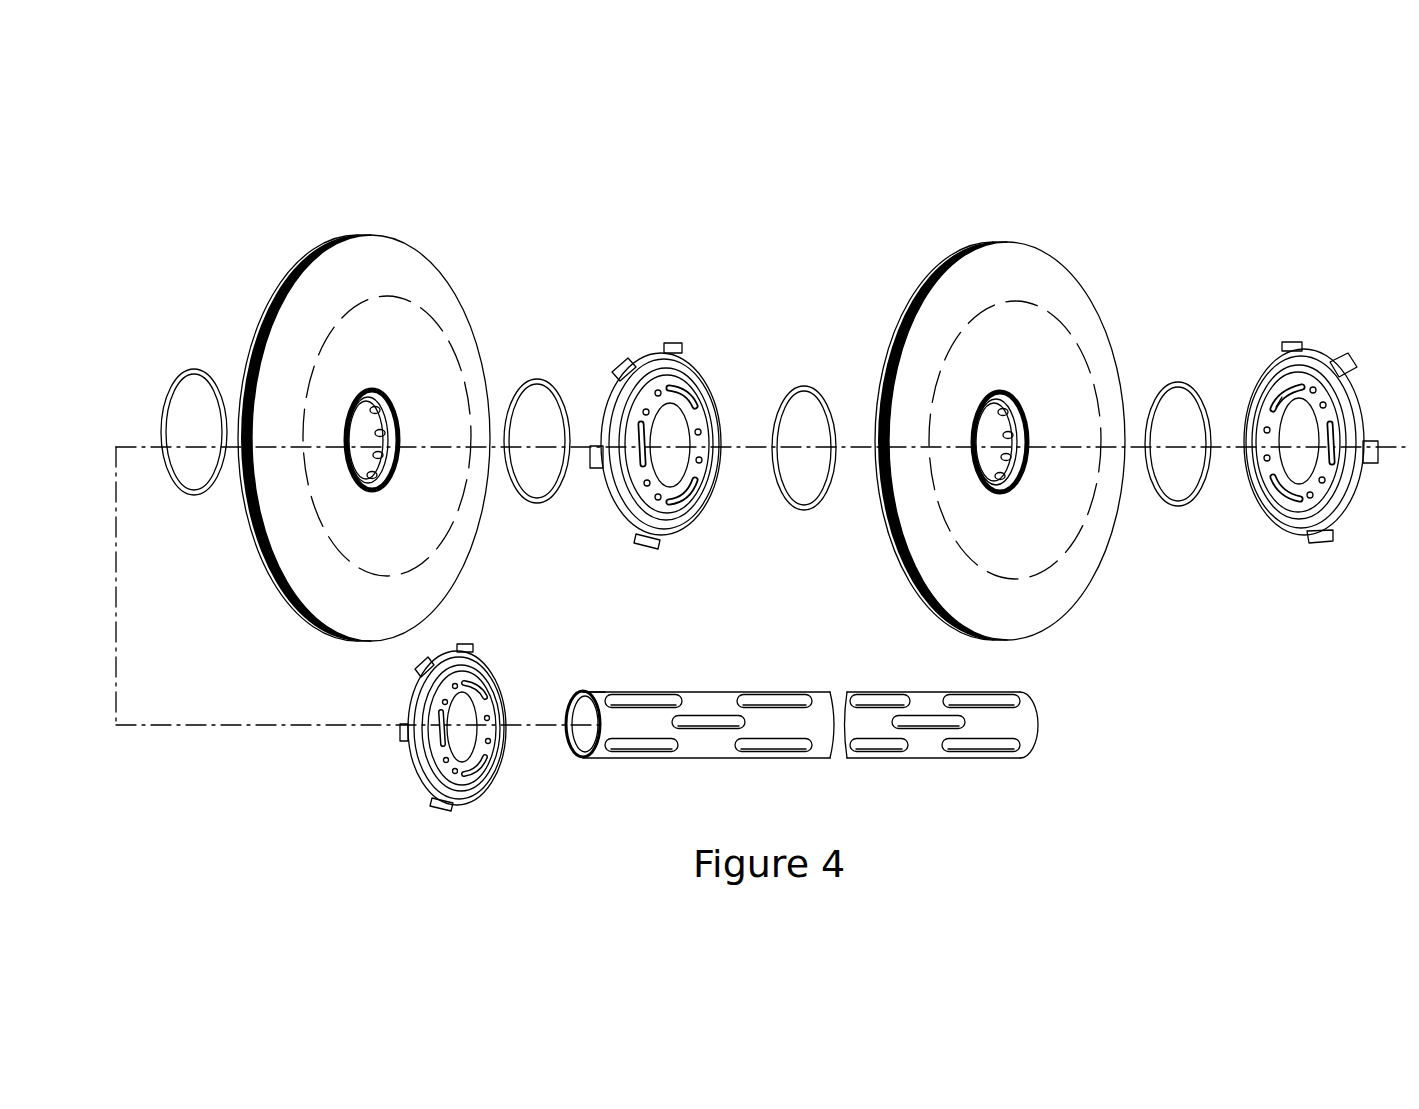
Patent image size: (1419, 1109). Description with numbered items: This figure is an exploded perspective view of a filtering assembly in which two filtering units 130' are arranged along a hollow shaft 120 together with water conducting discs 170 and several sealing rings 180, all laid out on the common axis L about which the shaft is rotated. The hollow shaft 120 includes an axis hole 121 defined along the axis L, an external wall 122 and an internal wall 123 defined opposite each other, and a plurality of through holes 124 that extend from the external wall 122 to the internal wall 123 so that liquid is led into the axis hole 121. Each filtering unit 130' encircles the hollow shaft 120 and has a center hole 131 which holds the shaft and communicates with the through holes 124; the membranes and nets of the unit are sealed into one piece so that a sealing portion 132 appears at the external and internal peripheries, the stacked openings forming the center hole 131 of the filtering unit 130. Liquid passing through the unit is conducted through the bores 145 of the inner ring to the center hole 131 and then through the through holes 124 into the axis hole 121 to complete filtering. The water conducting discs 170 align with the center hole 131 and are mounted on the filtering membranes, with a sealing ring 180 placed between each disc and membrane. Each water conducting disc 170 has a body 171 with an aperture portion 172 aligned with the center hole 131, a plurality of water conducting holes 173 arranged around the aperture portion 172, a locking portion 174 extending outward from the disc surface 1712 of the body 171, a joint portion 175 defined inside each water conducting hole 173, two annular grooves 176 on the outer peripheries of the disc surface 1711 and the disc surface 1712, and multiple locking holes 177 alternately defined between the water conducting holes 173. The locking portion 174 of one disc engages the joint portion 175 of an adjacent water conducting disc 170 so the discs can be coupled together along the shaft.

The filtering unit 130 is at (1128, 386).
The filtering unit 130' is at (364, 378).
The center hole 131 is at (394, 406).
The sealing portion 132 is at (262, 325).
The bores 145 is at (365, 433).
The water conducting disc 170 is at (702, 354).
The body 171 is at (1357, 408).
The disc surface 1711 is at (1340, 527).
The disc surface 1712 is at (1287, 532).
The aperture portion 172 is at (666, 470).
The water conducting holes 173 is at (1267, 410).
The locking portion 174 is at (1292, 388).
The joint portion 175 is at (1288, 502).
The annular grooves 176 is at (712, 467).
The locking holes 177 is at (704, 430).
The sealing ring 180 is at (196, 368).
The hollow shaft 120 is at (708, 690).
The axis hole 121 is at (582, 738).
The external wall 122 is at (581, 726).
The internal wall 123 is at (580, 692).
The through holes 124 is at (632, 698).
The axis L is at (250, 734).